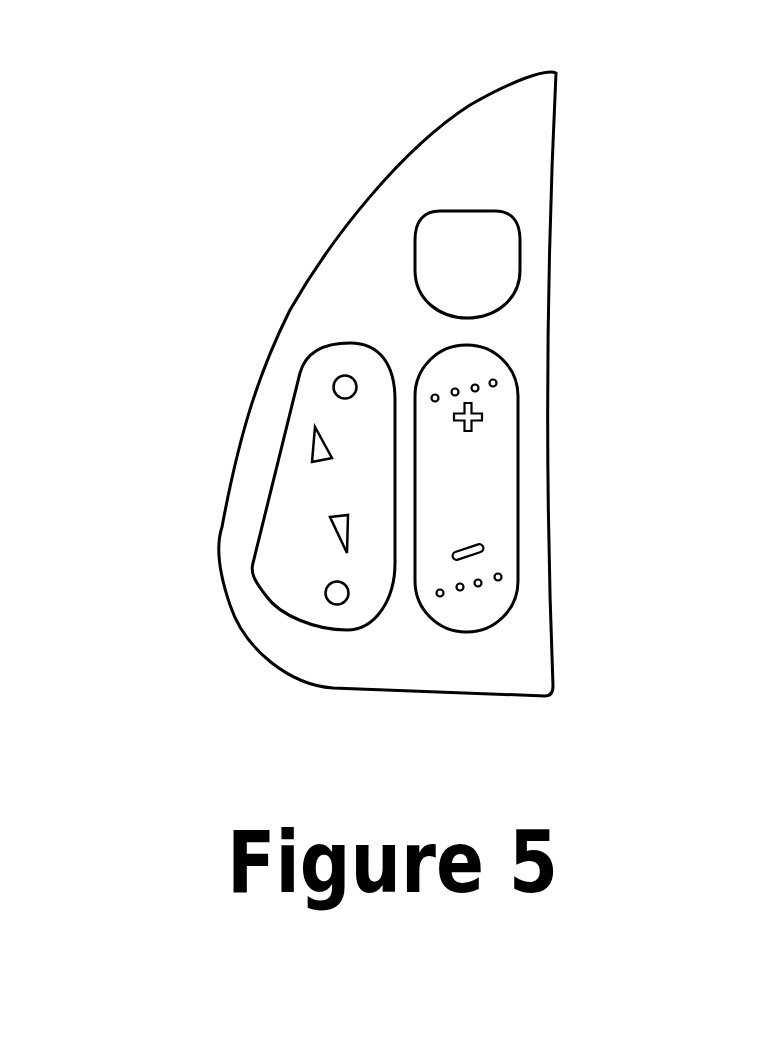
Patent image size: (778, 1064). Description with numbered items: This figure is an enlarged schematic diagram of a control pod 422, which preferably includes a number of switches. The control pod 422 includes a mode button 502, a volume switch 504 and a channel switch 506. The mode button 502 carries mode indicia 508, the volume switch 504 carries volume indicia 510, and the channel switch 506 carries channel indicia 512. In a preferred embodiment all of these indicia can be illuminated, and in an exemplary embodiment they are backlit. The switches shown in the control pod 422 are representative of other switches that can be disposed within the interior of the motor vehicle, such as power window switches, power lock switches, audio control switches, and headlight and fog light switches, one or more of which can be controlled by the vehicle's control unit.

The control pod 422 is at (222, 130).
The mode button 502 is at (495, 275).
The volume switch 504 is at (310, 403).
The channel switch 506 is at (500, 428).
The mode indicia 508 is at (463, 235).
The volume indicia 510 is at (297, 497).
The channel indicia 512 is at (487, 475).